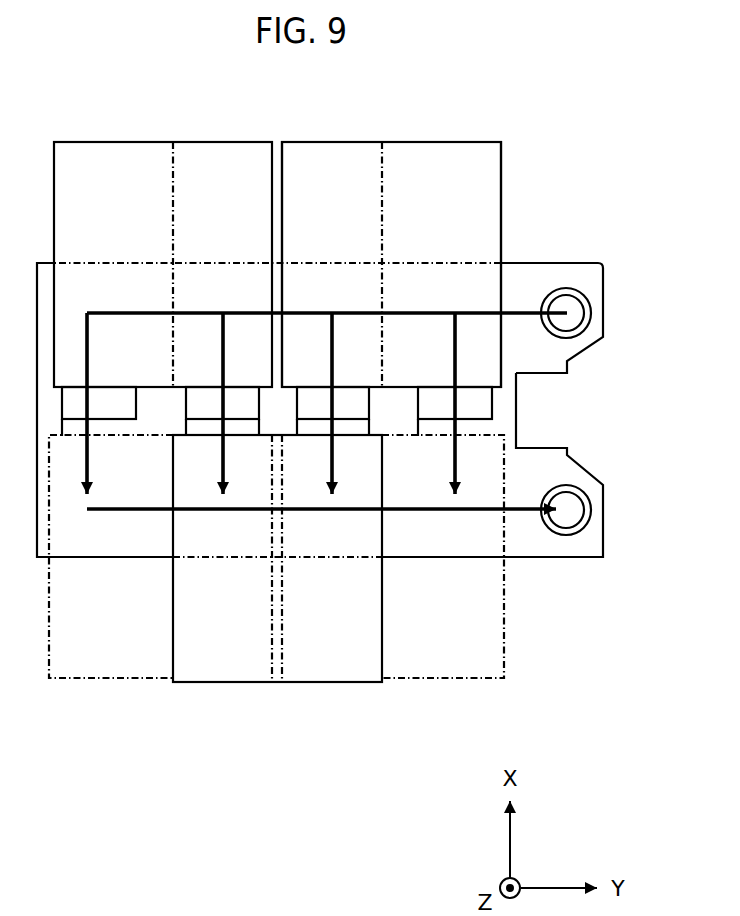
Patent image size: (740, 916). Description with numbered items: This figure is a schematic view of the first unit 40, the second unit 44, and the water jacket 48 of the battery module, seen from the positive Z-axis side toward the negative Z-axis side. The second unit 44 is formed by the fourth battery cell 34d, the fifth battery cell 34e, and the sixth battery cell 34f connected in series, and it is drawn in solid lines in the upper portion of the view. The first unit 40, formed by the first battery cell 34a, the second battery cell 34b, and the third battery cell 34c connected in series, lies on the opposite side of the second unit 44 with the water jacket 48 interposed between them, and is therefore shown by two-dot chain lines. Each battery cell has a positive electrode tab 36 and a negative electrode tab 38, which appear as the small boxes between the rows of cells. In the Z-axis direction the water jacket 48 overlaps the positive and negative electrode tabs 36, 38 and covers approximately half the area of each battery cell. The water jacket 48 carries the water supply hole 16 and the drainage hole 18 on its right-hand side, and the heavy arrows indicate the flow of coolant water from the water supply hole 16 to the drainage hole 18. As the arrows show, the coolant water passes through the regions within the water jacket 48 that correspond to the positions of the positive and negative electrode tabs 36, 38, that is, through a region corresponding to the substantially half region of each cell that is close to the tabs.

The water supply hole 16 is at (576, 313).
The drainage hole 18 is at (576, 510).
The first battery cell 34a is at (108, 668).
The second battery cell 34b is at (313, 152).
The third battery cell 34c is at (423, 667).
The fourth battery cell 34d is at (422, 152).
The fifth battery cell 34e is at (317, 684).
The sixth battery cell 34f is at (108, 152).
The positive electrode tab 36 is at (235, 398).
The negative electrode tab 38 is at (112, 397).
The first unit 40 is at (506, 629).
The second unit 44 is at (506, 173).
The water jacket 48 is at (563, 277).